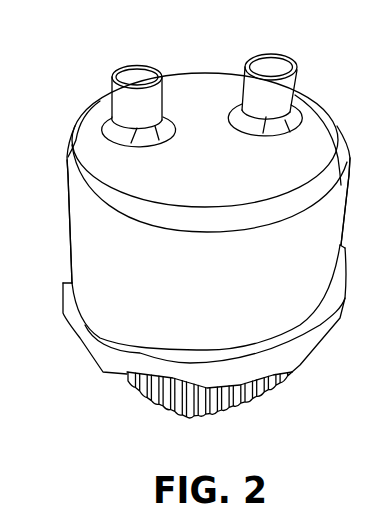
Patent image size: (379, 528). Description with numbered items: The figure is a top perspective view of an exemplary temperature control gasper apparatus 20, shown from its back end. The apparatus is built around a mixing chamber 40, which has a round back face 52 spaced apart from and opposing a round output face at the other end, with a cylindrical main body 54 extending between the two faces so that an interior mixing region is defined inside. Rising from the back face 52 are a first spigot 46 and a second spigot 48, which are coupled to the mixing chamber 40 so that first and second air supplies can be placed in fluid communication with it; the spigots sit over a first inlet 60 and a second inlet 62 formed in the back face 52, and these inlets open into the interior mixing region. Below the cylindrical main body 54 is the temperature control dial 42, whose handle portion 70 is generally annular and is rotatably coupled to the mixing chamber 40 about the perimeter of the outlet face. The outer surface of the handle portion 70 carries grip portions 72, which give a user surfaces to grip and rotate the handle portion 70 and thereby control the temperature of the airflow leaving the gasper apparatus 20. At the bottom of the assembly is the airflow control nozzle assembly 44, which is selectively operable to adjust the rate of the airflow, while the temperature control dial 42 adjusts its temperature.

The temperature control gasper apparatus 20 is at (339, 81).
The mixing chamber 40 is at (68, 158).
The temperature control dial 42 is at (70, 320).
The airflow control nozzle assembly 44 is at (256, 399).
The first spigot 46 is at (113, 95).
The second spigot 48 is at (247, 82).
The back face 52 is at (178, 92).
The cylindrical main body 54 is at (95, 232).
The first inlet 60 is at (162, 122).
The second inlet 62 is at (283, 115).
The handle portion 70 is at (62, 282).
The grip portions 72 is at (120, 354).